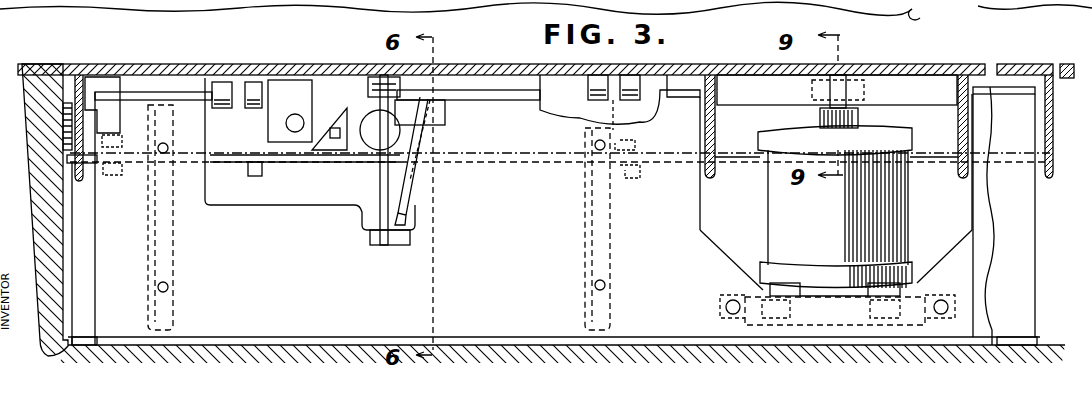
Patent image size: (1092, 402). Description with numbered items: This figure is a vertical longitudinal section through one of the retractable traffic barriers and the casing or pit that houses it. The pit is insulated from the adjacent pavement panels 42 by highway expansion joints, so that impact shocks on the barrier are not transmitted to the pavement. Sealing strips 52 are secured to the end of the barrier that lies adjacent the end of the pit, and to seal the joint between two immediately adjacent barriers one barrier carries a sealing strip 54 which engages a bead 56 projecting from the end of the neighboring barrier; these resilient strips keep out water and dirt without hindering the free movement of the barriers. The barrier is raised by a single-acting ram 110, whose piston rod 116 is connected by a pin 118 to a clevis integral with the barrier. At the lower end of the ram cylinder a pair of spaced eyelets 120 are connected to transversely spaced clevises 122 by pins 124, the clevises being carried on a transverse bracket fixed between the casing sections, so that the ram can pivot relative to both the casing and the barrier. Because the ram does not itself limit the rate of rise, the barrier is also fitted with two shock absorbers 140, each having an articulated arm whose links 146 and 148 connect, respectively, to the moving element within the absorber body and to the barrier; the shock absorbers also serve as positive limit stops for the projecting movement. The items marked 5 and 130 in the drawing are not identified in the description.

The display table top 5 is at (455, 70).
The pavement panels 42 is at (923, 18).
The sealing strips 52 is at (74, 72).
The sealing strip 54 is at (1048, 90).
The bead 56 is at (1058, 72).
The ram 110 is at (782, 215).
The piston rod 116 is at (840, 112).
The pin 118 is at (862, 92).
The eyelets 120 is at (782, 285).
The clevises 122 is at (750, 292).
The pins 124 is at (944, 300).
The vertical shaft 130 is at (380, 75).
The shock absorbers 140 is at (418, 203).
The link 146 is at (405, 222).
The link 148 is at (380, 178).